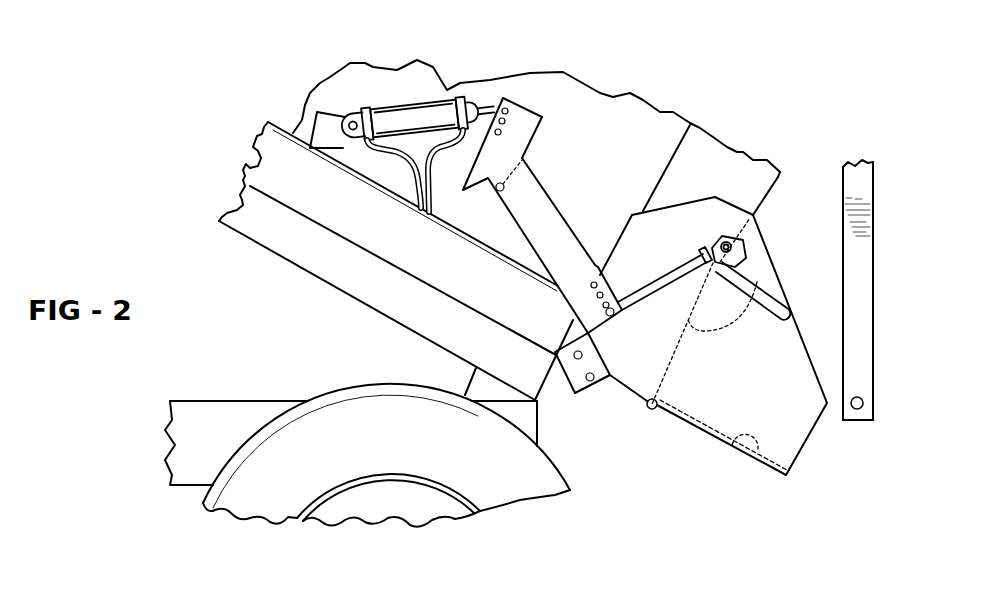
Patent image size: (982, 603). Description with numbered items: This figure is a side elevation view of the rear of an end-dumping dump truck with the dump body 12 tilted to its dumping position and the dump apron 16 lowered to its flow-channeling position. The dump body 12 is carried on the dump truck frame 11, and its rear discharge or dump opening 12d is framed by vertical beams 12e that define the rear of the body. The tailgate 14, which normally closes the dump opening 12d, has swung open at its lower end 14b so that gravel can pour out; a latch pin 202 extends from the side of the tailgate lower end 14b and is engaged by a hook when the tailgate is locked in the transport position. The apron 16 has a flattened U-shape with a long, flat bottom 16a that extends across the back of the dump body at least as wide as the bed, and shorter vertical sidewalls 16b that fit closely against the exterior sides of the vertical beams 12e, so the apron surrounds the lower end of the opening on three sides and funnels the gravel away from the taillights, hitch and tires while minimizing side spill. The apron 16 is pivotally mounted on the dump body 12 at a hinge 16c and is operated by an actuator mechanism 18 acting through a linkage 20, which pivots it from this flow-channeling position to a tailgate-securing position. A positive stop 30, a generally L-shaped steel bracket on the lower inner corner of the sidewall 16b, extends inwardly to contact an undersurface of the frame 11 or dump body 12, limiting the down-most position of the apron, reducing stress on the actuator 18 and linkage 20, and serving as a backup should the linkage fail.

The dump truck frame 11 is at (218, 401).
The dump body 12 is at (350, 58).
The dump opening 12d is at (757, 282).
The vertical beams 12e is at (725, 158).
The tailgate 14 is at (872, 198).
The tailgate lower end 14b is at (860, 421).
The dump apron 16 is at (808, 438).
The apron bottom 16a is at (756, 452).
The apron sidewalls 16b is at (753, 382).
The hinge 16c is at (650, 408).
The actuator mechanism 18 is at (431, 104).
The linkage 20 is at (547, 149).
The positive stop 30 is at (577, 371).
The latch pin 202 is at (860, 397).